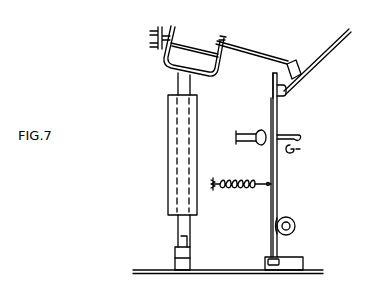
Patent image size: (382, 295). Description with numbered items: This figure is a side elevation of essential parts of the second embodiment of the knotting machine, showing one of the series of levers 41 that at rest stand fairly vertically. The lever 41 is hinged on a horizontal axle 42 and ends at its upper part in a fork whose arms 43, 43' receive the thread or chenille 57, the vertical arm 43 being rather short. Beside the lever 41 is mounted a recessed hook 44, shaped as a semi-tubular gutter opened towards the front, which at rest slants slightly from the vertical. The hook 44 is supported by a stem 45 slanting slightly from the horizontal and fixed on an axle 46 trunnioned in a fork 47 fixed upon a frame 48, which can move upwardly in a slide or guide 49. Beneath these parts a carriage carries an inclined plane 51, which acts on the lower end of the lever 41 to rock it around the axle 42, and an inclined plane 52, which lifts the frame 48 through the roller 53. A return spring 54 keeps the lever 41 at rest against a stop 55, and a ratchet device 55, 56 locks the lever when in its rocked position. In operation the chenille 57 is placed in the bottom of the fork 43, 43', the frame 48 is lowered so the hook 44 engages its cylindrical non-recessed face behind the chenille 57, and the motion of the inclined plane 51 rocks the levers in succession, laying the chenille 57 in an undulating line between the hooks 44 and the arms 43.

The lever 41 is at (277, 170).
The horizontal axle 42 is at (296, 226).
The vertical arm of fork 43 is at (258, 85).
The fork arm 43' is at (318, 61).
The recessed hook 44 is at (296, 66).
The stem 45 is at (238, 46).
The axle 46 is at (189, 44).
The fork 47 is at (170, 54).
The frame 48 is at (178, 82).
The slide or guide 49 is at (169, 153).
The inclined plane 51 is at (296, 262).
The inclined plane 52 is at (175, 254).
The roller 53 is at (178, 243).
The return spring 54 is at (252, 189).
The stop 55 is at (302, 137).
The ratchet device 56 is at (302, 150).
The chenille 57 is at (286, 92).